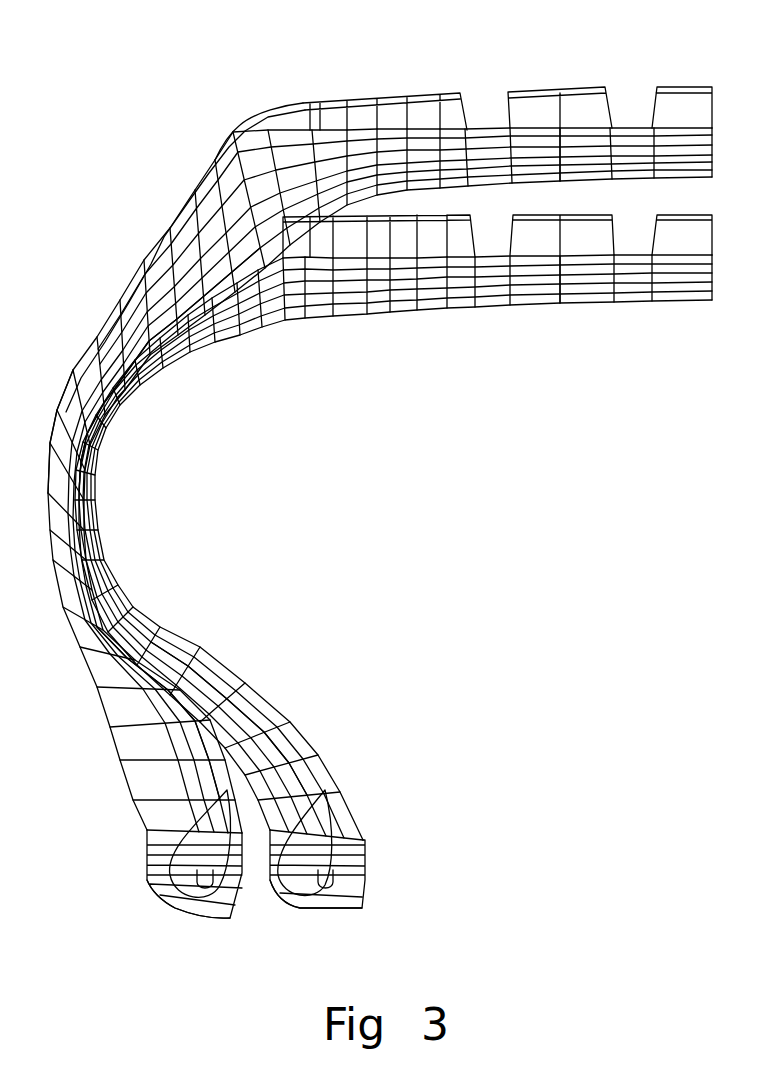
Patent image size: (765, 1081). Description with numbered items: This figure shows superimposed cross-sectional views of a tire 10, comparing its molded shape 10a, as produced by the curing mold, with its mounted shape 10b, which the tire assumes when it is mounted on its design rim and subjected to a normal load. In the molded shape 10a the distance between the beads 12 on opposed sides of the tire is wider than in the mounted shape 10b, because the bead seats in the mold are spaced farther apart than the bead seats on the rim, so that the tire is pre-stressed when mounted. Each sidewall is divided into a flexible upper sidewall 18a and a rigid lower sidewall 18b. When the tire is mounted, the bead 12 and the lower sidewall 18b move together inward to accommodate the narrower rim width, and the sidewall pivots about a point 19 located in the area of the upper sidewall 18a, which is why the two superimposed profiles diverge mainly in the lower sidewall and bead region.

The tire 10 is at (238, 954).
The molded shape 10a is at (680, 103).
The mounted shape 10b is at (700, 237).
The bead 12 is at (183, 905).
The upper sidewall 18a is at (97, 352).
The lower sidewall 18b is at (293, 737).
The pivot point 19 is at (68, 388).